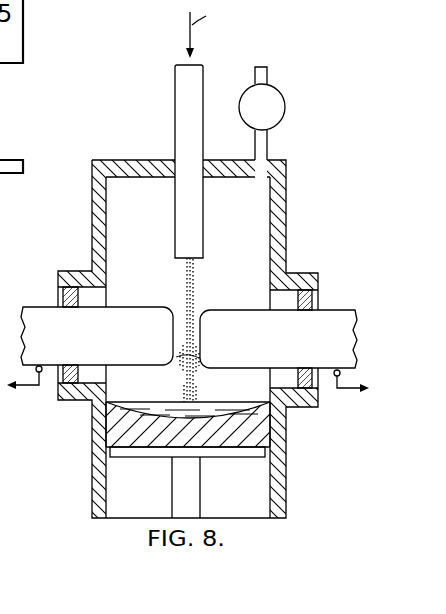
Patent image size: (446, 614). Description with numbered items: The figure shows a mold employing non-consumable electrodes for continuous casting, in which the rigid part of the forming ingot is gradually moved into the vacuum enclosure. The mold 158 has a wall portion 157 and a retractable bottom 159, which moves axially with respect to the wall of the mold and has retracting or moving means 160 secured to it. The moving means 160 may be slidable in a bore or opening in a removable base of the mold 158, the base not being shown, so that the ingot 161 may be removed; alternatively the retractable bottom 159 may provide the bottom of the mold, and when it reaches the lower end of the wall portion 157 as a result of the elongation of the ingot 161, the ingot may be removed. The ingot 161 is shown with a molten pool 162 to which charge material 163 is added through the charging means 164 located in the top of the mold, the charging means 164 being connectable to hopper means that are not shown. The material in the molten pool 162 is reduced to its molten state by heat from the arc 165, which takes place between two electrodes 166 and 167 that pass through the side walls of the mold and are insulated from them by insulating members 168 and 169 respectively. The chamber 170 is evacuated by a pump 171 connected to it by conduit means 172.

The wall portion 157 is at (281, 470).
The mold 158 is at (288, 438).
The retractable bottom 159 is at (245, 458).
The retracting or moving means 160 is at (200, 498).
The ingot 161 is at (262, 421).
The molten pool 162 is at (194, 408).
The charge material 163 is at (195, 281).
The charging means 164 is at (175, 113).
The arc 165 is at (178, 357).
The electrode 166 is at (136, 306).
The electrode 167 is at (240, 309).
The insulating member 168 is at (62, 298).
The insulating member 169 is at (311, 299).
The chamber 170 is at (152, 225).
The pump 171 is at (248, 126).
The conduit means 172 is at (268, 148).